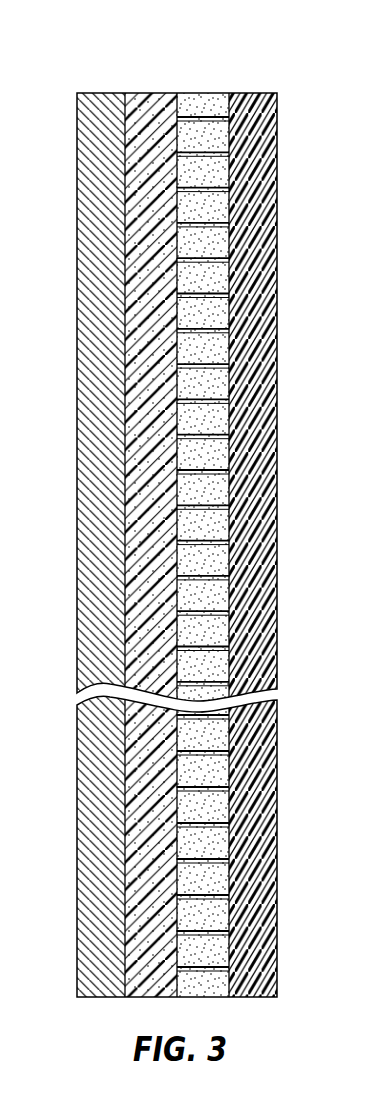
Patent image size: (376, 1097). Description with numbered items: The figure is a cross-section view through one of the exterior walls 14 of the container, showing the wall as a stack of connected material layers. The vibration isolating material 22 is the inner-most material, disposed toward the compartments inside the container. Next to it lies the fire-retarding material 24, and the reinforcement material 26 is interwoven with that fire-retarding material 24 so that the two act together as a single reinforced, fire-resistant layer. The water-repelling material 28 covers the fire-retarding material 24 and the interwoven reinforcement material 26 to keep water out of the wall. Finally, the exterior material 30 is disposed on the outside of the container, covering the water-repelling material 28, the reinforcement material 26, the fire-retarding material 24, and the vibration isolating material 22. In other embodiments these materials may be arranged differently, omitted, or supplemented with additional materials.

The exterior wall 14 is at (250, 63).
The vibration isolating material 22 is at (263, 230).
The fire-retarding material 24 is at (193, 135).
The reinforcement material 26 is at (203, 151).
The water-repelling material 28 is at (152, 113).
The exterior material 30 is at (100, 231).